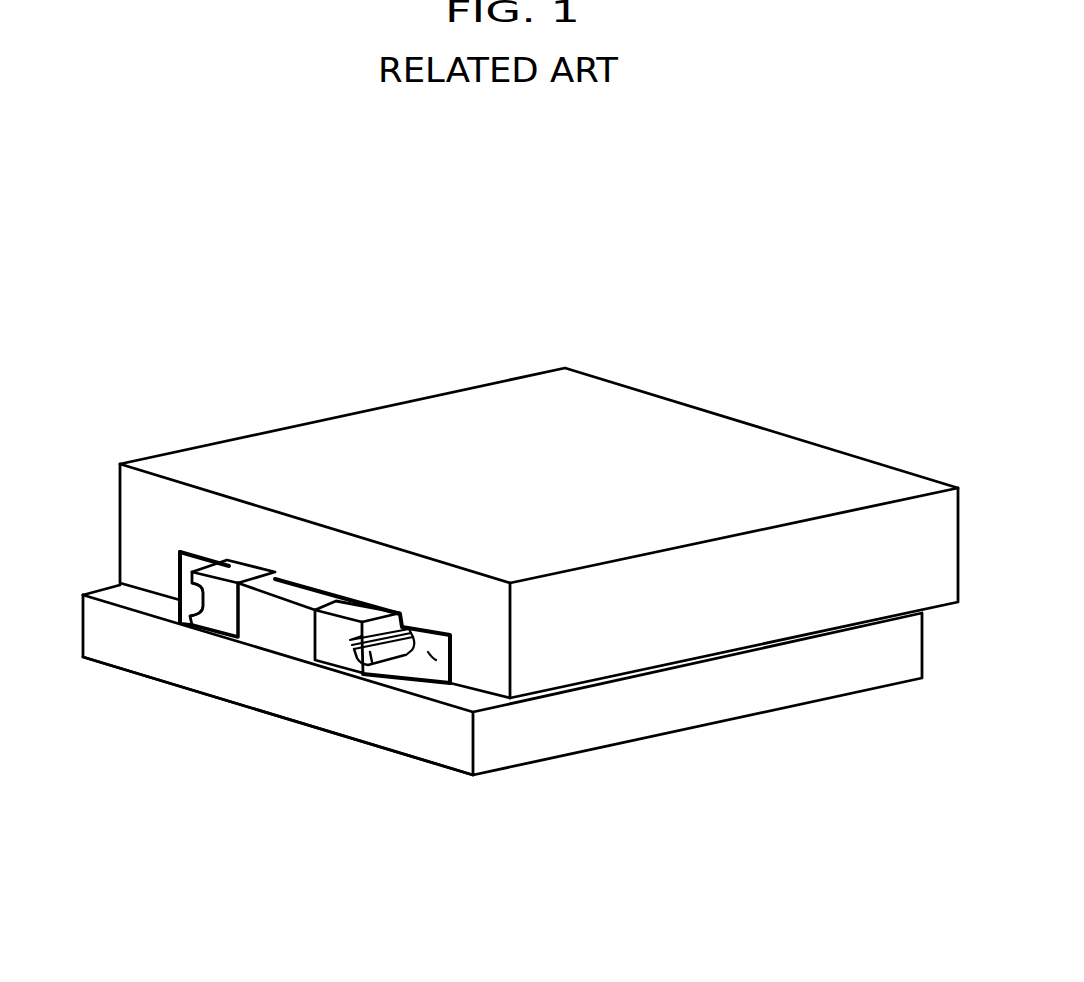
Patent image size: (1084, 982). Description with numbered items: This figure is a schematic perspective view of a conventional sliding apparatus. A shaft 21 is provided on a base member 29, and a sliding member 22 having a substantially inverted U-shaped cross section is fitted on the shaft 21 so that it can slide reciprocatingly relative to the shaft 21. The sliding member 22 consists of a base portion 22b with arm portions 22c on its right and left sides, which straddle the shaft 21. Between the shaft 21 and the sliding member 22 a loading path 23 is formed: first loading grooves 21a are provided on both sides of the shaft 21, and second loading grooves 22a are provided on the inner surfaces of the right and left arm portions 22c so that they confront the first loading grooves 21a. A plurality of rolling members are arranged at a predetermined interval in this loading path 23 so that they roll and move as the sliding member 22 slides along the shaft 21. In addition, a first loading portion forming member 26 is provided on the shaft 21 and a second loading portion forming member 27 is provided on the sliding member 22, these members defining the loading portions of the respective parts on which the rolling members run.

The shaft 21 is at (270, 630).
The first loading groove 21a is at (372, 660).
The sliding member 22 is at (350, 412).
The second loading groove 22a is at (404, 658).
The base portion 22b is at (292, 542).
The arm portion 22c is at (128, 563).
The loading path 23 is at (385, 646).
The first loading portion forming member 26 is at (207, 615).
The second loading portion forming member 27 is at (187, 585).
The base member 29 is at (287, 718).